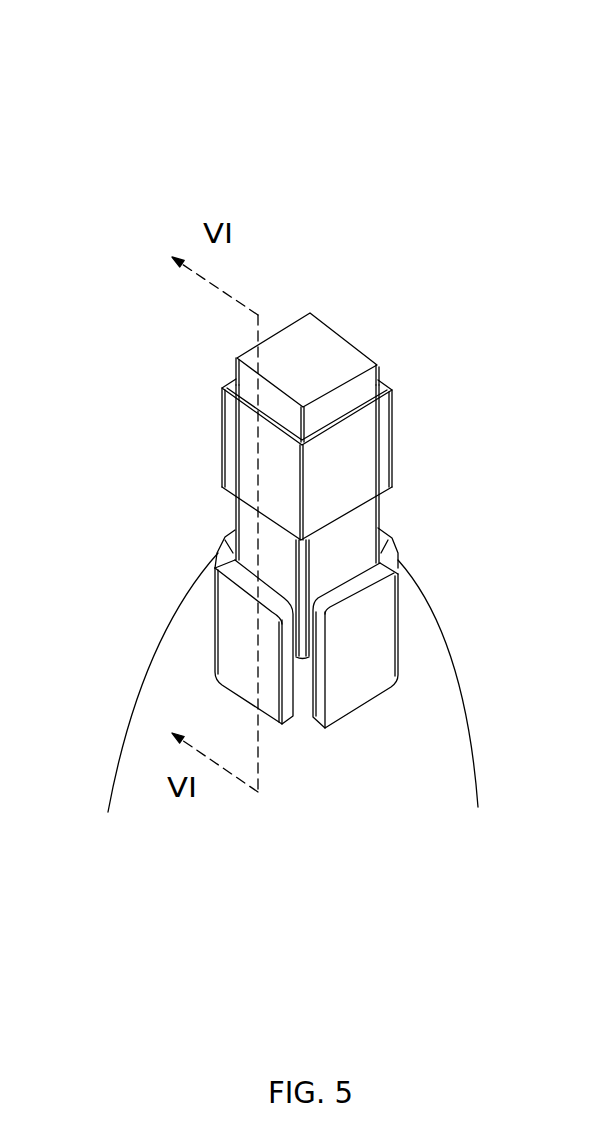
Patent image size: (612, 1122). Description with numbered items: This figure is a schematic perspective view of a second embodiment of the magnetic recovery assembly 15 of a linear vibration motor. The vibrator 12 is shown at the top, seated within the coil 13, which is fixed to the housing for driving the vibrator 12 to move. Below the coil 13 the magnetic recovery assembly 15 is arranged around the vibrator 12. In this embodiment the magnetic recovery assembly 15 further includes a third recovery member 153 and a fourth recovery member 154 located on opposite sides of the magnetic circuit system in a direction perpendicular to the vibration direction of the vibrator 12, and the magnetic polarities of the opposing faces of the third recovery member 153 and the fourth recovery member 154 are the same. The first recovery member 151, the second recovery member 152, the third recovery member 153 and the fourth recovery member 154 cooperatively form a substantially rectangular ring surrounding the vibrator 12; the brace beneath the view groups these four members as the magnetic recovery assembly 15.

The vibrator 12 is at (247, 355).
The coil 13 is at (240, 455).
The magnetic recovery assembly 15 is at (295, 467).
The first recovery member 151 is at (285, 668).
The second recovery member 152 is at (444, 690).
The third recovery member 153 is at (360, 678).
The fourth recovery member 154 is at (157, 692).